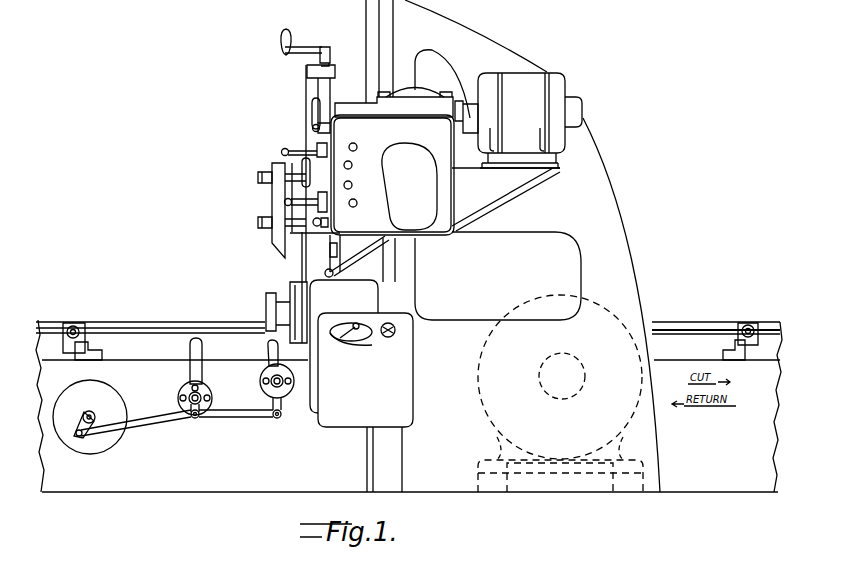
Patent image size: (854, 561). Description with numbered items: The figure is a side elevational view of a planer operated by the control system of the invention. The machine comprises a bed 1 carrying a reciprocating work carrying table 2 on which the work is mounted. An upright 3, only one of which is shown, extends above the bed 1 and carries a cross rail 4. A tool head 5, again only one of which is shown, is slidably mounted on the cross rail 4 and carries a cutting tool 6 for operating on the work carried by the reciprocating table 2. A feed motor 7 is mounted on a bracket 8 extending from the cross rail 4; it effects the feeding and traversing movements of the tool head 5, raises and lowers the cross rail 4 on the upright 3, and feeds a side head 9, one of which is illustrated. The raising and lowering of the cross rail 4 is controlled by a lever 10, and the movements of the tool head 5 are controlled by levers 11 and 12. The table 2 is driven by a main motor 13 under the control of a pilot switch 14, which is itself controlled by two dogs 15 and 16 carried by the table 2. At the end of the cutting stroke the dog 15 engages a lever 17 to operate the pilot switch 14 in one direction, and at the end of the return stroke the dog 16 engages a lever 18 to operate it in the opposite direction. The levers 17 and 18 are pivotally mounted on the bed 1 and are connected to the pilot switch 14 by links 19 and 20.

The bed 1 is at (753, 490).
The reciprocating work carrying table 2 is at (699, 323).
The upright 3 is at (624, 220).
The cross rail 4 is at (347, 109).
The tool head 5 is at (308, 136).
The cutting tool 6 is at (277, 245).
The feed motor 7 is at (570, 83).
The bracket 8 is at (510, 190).
The side head 9 is at (303, 284).
The lever 10 is at (313, 128).
The lever 11 is at (281, 152).
The lever 12 is at (284, 202).
The main motor 13 is at (523, 303).
The pilot switch 14 is at (99, 449).
The dog 15 is at (97, 358).
The dog 16 is at (722, 350).
The lever 17 is at (189, 350).
The lever 18 is at (268, 348).
The link 19 is at (245, 418).
The link 20 is at (163, 421).